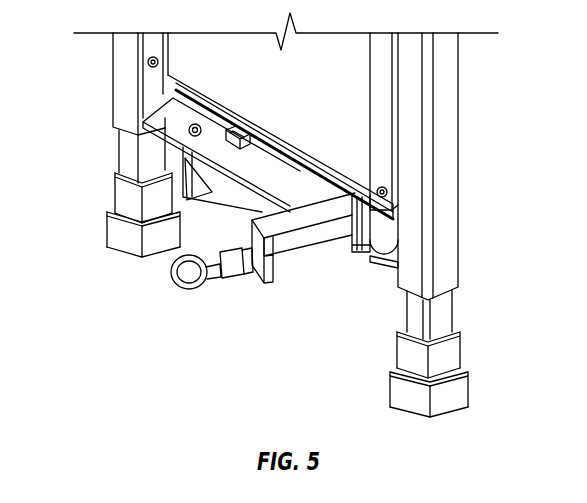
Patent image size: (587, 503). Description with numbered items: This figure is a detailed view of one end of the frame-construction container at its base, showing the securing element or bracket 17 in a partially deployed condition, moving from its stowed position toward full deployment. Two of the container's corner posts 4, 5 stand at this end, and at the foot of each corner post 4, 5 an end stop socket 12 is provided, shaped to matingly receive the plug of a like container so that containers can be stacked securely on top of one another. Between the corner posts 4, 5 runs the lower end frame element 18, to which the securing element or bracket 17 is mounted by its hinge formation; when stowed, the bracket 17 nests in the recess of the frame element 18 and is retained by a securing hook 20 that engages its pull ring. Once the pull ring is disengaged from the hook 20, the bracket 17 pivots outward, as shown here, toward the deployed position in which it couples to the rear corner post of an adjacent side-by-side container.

The corner post 4 is at (415, 200).
The corner post 5 is at (127, 78).
The end stop socket 12 is at (114, 228).
The securing element or bracket 17 is at (310, 252).
The end frame element 18 is at (304, 150).
The securing hook 20 is at (241, 130).